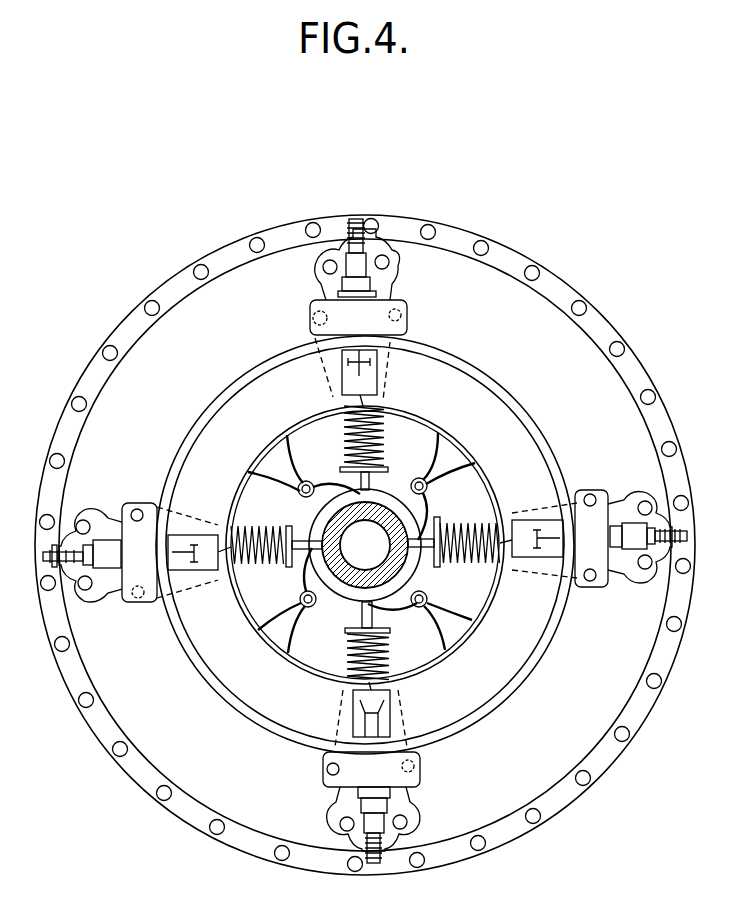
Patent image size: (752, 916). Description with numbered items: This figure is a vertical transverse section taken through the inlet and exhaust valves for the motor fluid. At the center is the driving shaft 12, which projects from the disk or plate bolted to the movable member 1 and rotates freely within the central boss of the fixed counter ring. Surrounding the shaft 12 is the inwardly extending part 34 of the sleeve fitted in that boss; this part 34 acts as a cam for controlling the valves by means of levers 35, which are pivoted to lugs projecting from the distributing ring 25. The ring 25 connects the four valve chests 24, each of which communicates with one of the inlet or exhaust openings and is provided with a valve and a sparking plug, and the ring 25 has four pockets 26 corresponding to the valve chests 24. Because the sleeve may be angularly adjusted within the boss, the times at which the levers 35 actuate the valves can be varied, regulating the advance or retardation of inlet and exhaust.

The movable member 1 is at (580, 360).
The shaft 12 is at (365, 545).
The valve chest 24 is at (378, 309).
The distributing ring 25 is at (492, 397).
The pocket 26 is at (370, 367).
The inwardly extending part 34 is at (402, 576).
The lever 35 is at (370, 497).